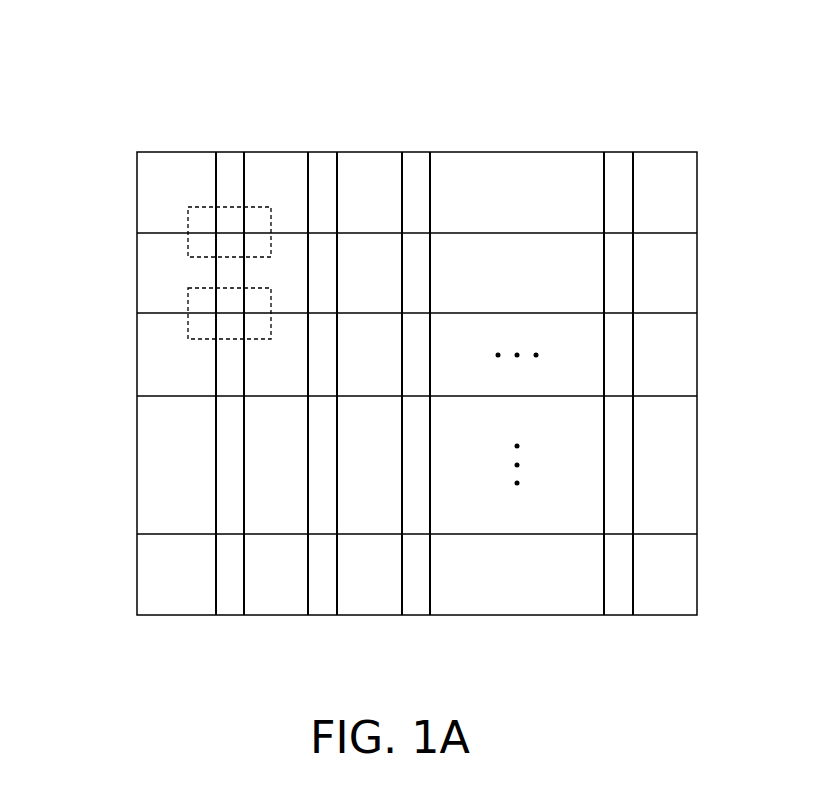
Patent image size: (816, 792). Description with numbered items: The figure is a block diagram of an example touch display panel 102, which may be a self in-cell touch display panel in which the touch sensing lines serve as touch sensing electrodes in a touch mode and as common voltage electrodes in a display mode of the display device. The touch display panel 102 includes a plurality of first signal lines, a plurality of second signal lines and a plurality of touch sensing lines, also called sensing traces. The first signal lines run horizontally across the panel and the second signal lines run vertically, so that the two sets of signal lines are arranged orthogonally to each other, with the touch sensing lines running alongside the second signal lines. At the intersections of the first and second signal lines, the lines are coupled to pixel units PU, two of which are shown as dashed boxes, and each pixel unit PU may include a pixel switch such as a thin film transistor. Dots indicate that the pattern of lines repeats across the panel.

The touch display panel 102 is at (96, 81).
The pixel unit PU is at (271, 249).